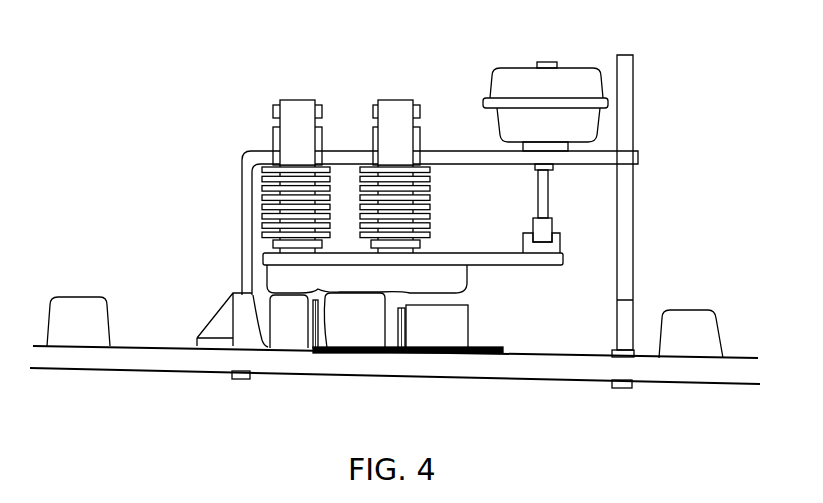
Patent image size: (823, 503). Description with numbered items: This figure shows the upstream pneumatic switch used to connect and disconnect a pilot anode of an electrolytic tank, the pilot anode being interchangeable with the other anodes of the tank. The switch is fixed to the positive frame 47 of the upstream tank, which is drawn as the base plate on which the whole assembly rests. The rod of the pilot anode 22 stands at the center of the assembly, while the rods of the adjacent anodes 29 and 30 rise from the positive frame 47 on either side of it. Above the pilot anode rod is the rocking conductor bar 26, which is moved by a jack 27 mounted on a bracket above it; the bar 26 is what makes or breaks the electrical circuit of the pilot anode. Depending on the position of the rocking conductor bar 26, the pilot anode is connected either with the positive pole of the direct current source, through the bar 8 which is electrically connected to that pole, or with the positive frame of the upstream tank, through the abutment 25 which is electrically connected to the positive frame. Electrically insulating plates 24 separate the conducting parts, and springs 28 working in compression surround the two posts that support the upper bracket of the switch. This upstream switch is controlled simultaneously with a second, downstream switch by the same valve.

The bar 8 is at (457, 323).
The rod of the pilot anode 22 is at (362, 340).
The electrically insulating plates 24 is at (312, 326).
The abutment 25 is at (283, 345).
The rocking conductor bar 26 is at (453, 273).
The jack 27 is at (570, 77).
The springs 28 is at (275, 203).
The rod of an adjacent anode 29 is at (88, 307).
The rod of an adjacent anode 30 is at (683, 318).
The positive frame 47 is at (167, 367).